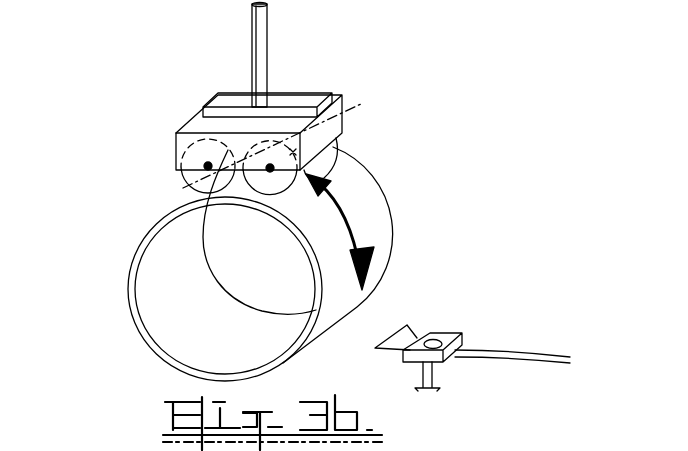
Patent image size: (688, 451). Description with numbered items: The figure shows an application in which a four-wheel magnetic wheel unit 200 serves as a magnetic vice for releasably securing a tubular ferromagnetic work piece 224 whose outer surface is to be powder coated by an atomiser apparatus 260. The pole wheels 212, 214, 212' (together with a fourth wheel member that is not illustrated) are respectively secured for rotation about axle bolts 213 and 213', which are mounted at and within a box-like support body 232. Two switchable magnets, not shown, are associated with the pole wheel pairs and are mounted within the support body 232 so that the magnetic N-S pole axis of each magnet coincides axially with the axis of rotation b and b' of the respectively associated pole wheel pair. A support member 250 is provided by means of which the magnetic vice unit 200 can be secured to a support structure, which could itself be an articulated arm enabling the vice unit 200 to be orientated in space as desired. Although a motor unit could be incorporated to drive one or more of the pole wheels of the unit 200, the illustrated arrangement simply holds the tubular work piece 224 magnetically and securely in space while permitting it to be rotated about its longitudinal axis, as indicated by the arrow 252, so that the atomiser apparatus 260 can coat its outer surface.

The magnetic wheel unit 200 is at (240, 142).
The pole wheel 212 is at (272, 211).
The pole wheel 212' is at (175, 171).
The axle bolt 213 is at (305, 119).
The axle bolt 213' is at (158, 132).
The pole wheel 214 is at (340, 146).
The tubular ferromagnetic work piece 224 is at (367, 185).
The box-like support body 232 is at (197, 123).
The support member 250 is at (268, 58).
The arrow 252 is at (353, 233).
The atomiser apparatus 260 is at (473, 334).
The axis of rotation b is at (236, 223).
The axis of rotation b' is at (160, 218).